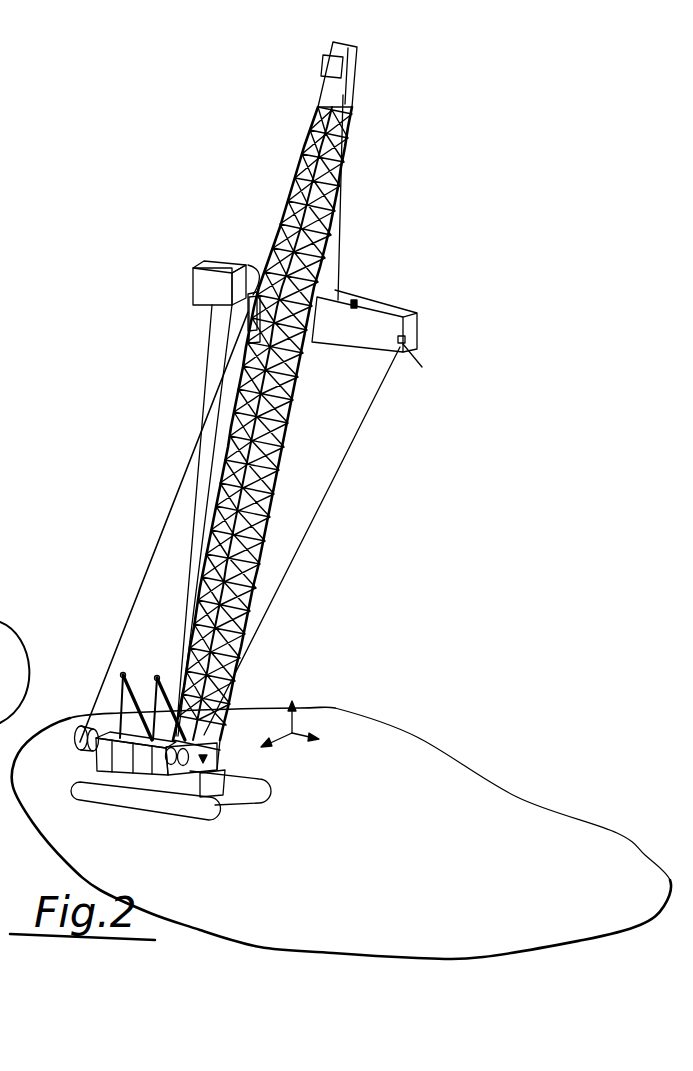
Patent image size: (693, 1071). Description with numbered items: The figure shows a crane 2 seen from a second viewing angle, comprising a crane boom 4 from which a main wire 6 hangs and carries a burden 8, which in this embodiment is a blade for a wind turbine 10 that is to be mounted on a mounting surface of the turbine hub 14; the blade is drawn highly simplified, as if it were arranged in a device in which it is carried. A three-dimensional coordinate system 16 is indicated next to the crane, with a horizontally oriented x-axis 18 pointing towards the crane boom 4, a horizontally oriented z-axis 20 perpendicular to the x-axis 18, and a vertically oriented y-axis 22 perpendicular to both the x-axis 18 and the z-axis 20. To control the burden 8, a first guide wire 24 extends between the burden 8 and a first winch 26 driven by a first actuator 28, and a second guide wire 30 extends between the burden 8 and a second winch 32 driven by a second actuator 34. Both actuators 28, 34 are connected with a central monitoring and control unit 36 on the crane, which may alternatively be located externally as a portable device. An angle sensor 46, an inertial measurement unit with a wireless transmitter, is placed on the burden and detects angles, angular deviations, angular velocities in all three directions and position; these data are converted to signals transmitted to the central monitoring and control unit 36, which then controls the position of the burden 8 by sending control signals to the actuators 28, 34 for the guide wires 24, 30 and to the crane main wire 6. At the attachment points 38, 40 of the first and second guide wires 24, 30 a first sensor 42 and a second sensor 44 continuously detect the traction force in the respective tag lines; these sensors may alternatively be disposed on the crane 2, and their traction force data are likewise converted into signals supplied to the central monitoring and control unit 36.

The crane 2 is at (98, 484).
The crane boom 4 is at (292, 195).
The main wire 6 is at (340, 257).
The burden 8 is at (367, 332).
The wind turbine 10 is at (10, 264).
The turbine hub 14 is at (335, 617).
The three-dimensional coordinate system 16 is at (341, 688).
The x-axis 18 is at (274, 742).
The z-axis 20 is at (304, 731).
The y-axis 22 is at (270, 688).
The first guide wire 24 is at (313, 500).
The first winch 26 is at (190, 755).
The first actuator 28 is at (160, 750).
The second guide wire 30 is at (163, 536).
The second winch 32 is at (78, 739).
The second actuator 34 is at (90, 758).
The central monitoring and control unit 36 is at (213, 753).
The attachment point 38 is at (462, 374).
The attachment point 40 is at (215, 307).
The first sensor 42 is at (405, 346).
The second sensor 44 is at (245, 313).
The angle sensor 46 is at (372, 286).